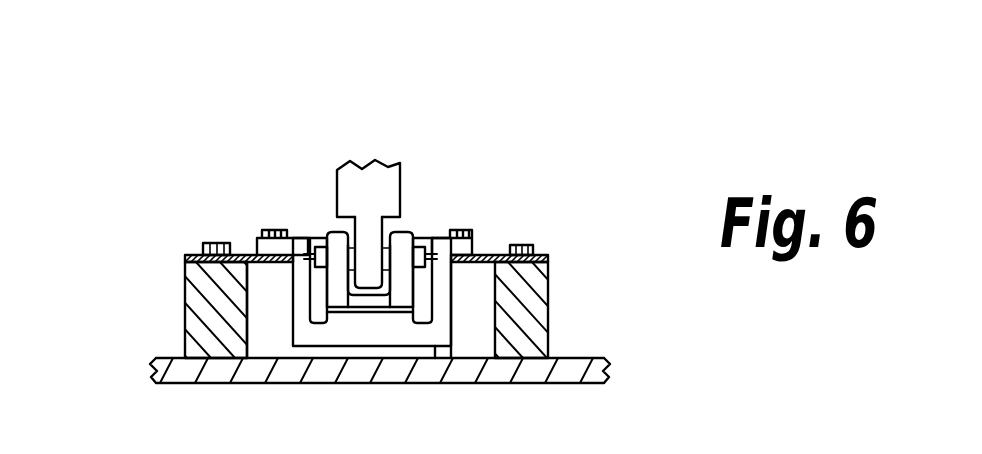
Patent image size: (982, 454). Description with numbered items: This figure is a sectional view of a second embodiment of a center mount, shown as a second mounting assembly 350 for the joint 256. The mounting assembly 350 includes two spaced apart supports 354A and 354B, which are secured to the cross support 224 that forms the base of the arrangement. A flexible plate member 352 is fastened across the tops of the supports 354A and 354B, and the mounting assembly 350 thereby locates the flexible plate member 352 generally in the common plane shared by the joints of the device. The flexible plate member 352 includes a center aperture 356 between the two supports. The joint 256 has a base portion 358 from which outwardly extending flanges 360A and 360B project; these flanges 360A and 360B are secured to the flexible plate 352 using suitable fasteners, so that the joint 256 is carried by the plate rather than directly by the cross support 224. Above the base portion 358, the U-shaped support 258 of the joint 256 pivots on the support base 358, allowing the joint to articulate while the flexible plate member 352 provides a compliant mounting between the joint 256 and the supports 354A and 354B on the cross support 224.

The cross support 224 is at (602, 378).
The second mounting assembly 350 is at (181, 154).
The support 354A is at (185, 282).
The support 354B is at (552, 302).
The center aperture 356 is at (247, 263).
The flexible plate member 352 is at (483, 252).
The joint 256 is at (476, 172).
The flange 360A is at (295, 234).
The flange 360B is at (440, 238).
The U-shaped support 258 is at (401, 240).
The base portion 358 is at (436, 357).